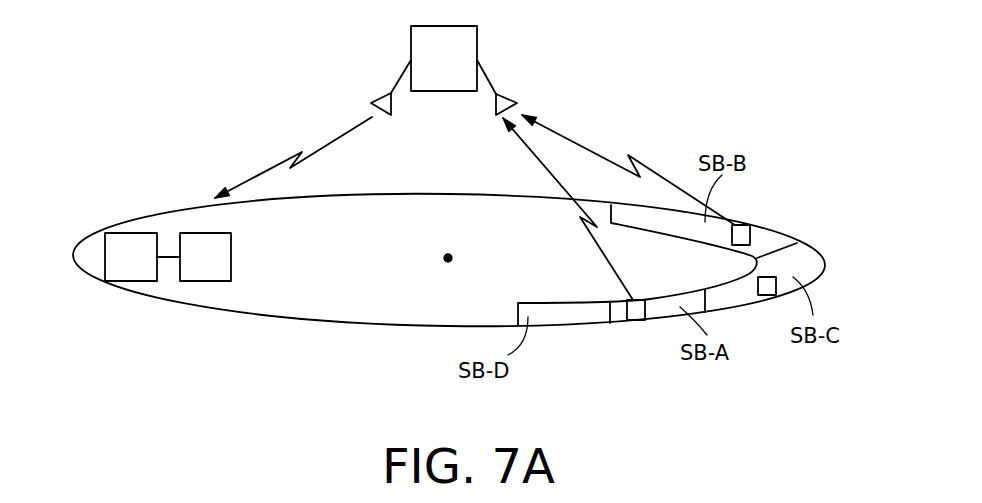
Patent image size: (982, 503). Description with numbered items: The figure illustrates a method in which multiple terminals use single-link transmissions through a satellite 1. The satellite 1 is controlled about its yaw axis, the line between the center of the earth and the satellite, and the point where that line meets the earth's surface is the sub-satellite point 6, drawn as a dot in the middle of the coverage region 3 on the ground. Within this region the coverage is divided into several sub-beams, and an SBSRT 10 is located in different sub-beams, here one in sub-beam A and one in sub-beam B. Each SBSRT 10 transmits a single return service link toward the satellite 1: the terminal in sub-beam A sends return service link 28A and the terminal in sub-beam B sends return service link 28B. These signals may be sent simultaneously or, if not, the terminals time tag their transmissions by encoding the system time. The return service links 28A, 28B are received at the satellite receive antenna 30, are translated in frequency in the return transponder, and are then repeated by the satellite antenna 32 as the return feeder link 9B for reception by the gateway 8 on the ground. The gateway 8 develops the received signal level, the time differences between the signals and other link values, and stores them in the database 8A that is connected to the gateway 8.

The satellite 1 is at (433, 25).
The satellite antenna 32 is at (376, 100).
The receive antenna 30 is at (500, 97).
The return feeder link 9B is at (205, 233).
The return service link 28A is at (527, 150).
The return service link 28B is at (572, 138).
The satellite coverage area / earth beam footprint 3 is at (327, 195).
The database 8A is at (132, 232).
The gateway 8 is at (188, 281).
The sub-satellite point 6 is at (448, 258).
The SBSRT 10 is at (778, 208).